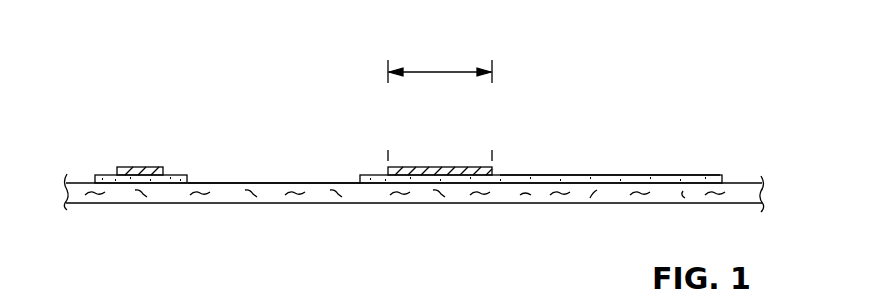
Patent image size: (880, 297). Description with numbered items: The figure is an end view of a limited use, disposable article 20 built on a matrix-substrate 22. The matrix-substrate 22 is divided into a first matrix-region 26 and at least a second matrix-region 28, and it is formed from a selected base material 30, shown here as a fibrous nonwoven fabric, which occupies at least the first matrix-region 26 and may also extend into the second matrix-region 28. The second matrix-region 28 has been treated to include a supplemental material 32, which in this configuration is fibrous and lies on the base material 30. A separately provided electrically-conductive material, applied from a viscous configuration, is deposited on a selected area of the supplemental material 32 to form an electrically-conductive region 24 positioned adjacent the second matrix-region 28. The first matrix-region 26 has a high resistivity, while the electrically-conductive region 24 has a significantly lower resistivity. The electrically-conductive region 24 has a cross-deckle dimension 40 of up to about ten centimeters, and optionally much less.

The disposable article 20 is at (112, 122).
The matrix-substrate 22 is at (90, 203).
The electrically-conductive region 24 is at (142, 167).
The first matrix-region 26 is at (268, 165).
The second matrix-region 28 is at (583, 165).
The base material 30 is at (183, 193).
The supplemental material 32 is at (100, 175).
The cross-deckle dimension 40 is at (445, 70).